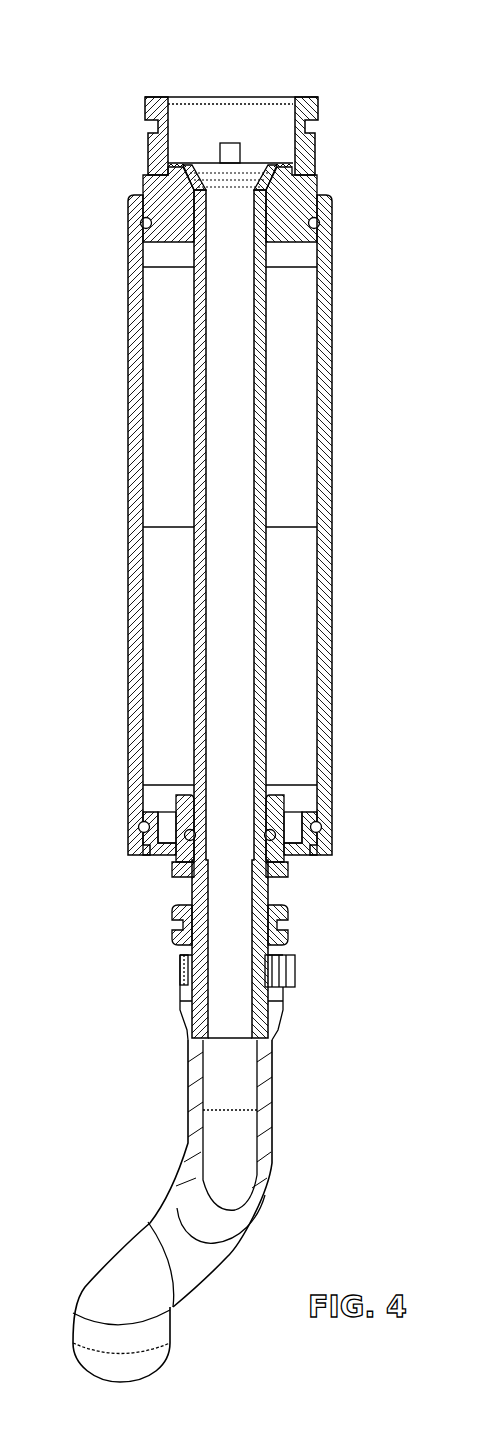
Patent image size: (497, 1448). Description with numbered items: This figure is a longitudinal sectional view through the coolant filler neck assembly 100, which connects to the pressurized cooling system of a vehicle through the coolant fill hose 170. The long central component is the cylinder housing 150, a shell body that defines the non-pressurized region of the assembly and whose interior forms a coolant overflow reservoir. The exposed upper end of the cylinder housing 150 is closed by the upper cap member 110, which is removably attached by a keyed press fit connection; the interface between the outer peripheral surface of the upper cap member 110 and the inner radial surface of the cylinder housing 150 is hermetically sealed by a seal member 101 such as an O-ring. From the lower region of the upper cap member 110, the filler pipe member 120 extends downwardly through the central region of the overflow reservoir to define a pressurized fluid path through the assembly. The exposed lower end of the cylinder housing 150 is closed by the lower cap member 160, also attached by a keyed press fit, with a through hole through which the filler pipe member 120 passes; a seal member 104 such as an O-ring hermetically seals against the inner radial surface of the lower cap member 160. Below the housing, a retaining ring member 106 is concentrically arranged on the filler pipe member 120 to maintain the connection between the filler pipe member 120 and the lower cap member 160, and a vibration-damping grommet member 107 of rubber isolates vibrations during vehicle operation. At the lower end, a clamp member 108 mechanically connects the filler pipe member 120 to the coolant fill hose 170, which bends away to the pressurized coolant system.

The coolant filler neck assembly 100 is at (80, 60).
The upper cap member 110 is at (148, 112).
The seal member 101 is at (144, 226).
The cylinder housing 150 is at (138, 475).
The filler pipe member 120 is at (203, 587).
The seal member 104 is at (145, 832).
The lower cap member 160 is at (165, 857).
The retaining ring member 106 is at (280, 874).
The vibration-damping grommet member 107 is at (283, 918).
The clamp member 108 is at (292, 975).
The coolant fill hose 170 is at (268, 1080).